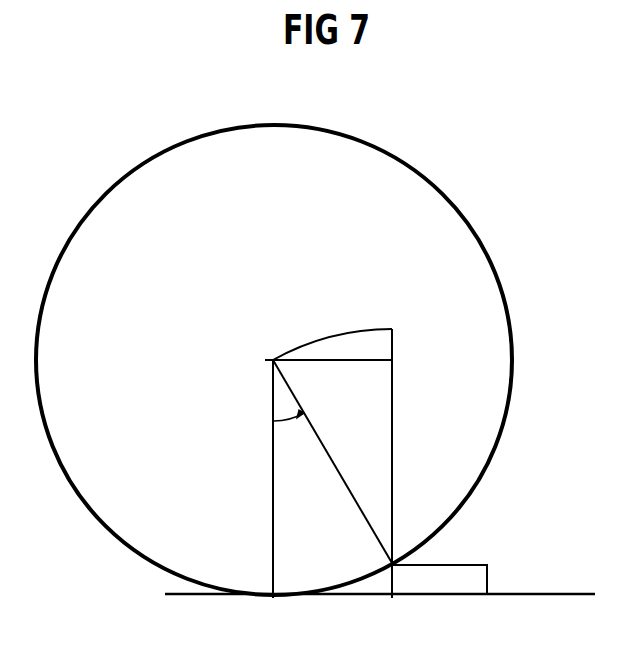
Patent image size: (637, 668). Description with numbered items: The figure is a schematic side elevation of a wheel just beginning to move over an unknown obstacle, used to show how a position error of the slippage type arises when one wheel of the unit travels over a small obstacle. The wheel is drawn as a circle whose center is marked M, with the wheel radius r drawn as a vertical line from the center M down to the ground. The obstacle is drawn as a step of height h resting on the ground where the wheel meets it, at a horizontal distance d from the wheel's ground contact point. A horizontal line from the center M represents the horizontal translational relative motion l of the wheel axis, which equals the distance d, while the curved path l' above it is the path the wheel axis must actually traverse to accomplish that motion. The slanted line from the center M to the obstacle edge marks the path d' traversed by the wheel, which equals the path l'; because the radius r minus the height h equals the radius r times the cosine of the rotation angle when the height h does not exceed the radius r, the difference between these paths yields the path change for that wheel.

The wheel center M is at (258, 359).
The wheel radius r is at (262, 479).
The horizontal distance l is at (332, 376).
The arc length l' is at (332, 449).
The distance from center to step edge d' is at (332, 463).
The step height h is at (439, 580).
The horizontal distance to step d is at (337, 615).